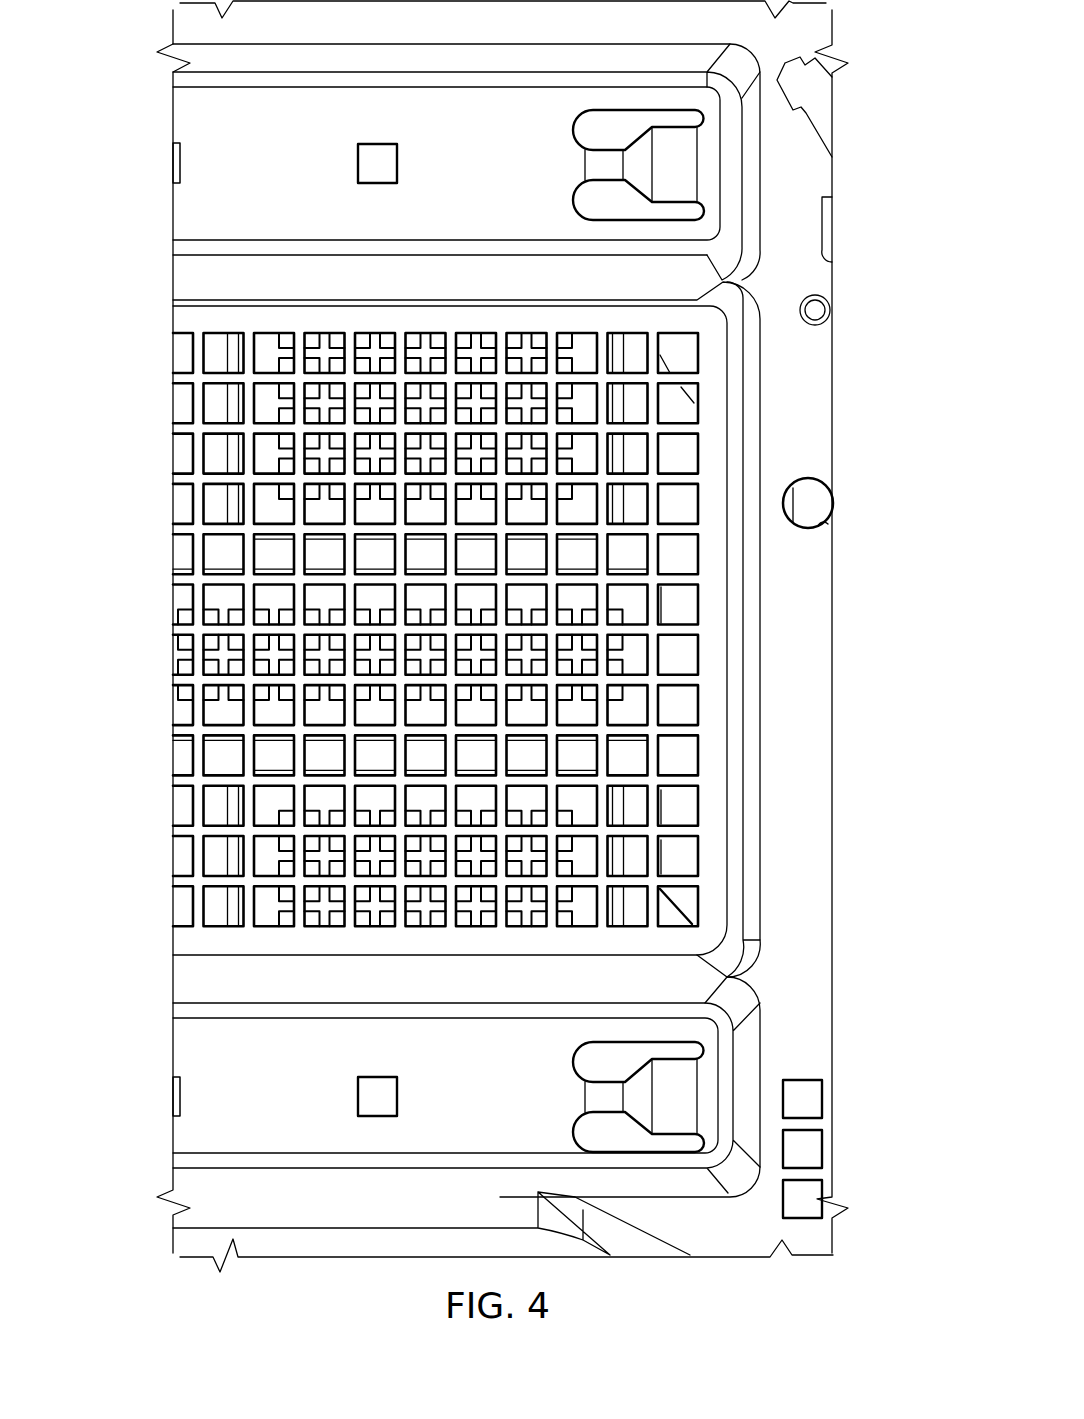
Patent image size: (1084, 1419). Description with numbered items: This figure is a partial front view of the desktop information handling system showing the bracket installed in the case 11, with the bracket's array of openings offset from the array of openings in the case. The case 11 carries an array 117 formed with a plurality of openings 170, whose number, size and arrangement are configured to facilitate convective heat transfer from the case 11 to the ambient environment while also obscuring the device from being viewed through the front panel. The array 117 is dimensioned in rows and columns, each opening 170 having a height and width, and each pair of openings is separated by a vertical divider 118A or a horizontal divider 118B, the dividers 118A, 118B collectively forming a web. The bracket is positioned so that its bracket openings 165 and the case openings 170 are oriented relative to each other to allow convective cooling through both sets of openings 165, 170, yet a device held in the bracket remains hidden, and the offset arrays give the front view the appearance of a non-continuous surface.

The case 11 is at (825, 660).
The array 117 is at (150, 422).
The vertical divider 118A is at (592, 358).
The horizontal divider 118B is at (625, 385).
The opening 170 is at (697, 461).
The bracket opening 165 is at (588, 494).